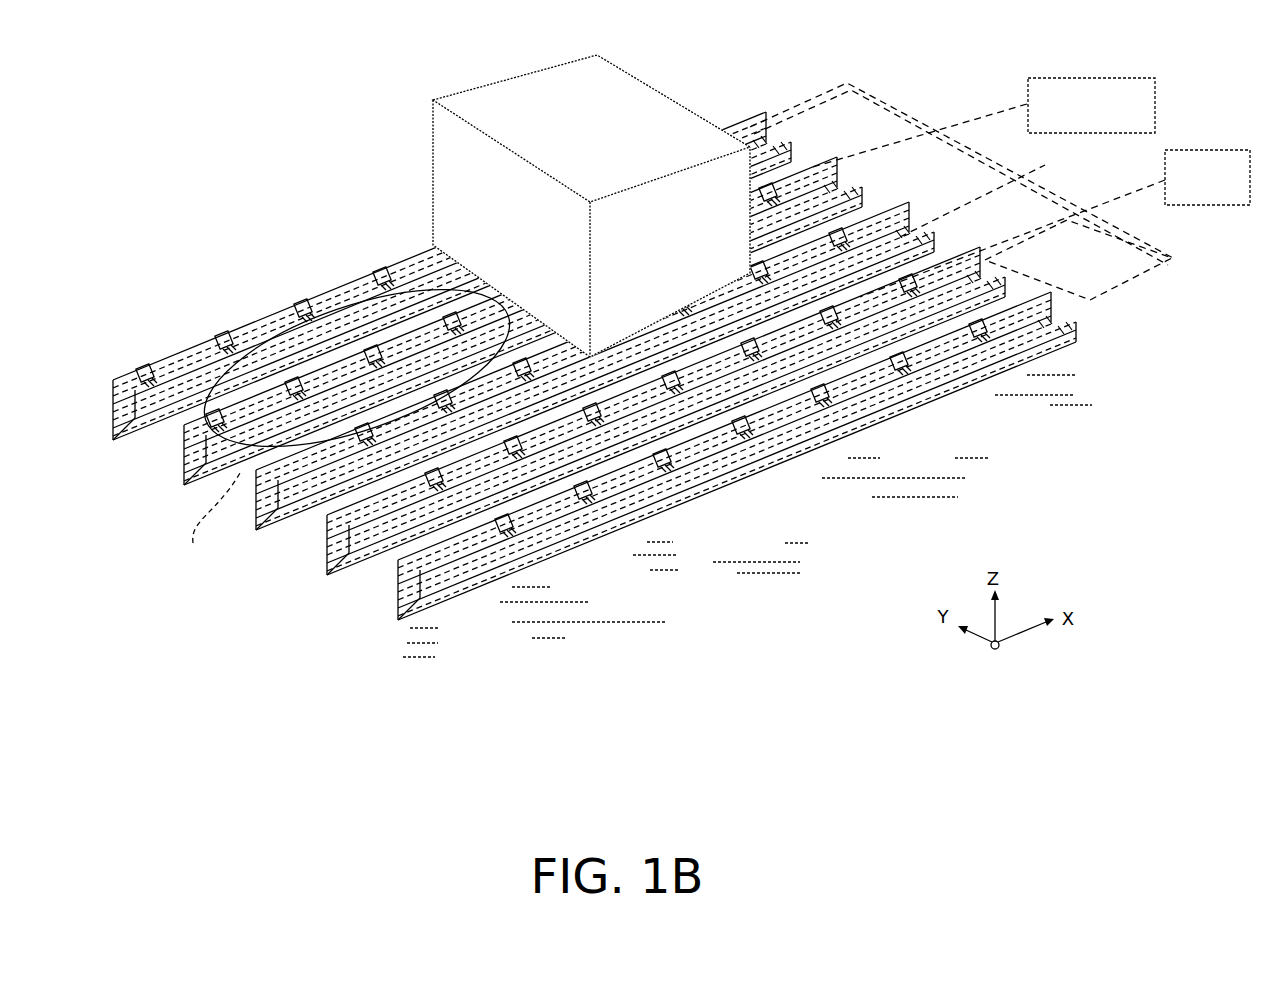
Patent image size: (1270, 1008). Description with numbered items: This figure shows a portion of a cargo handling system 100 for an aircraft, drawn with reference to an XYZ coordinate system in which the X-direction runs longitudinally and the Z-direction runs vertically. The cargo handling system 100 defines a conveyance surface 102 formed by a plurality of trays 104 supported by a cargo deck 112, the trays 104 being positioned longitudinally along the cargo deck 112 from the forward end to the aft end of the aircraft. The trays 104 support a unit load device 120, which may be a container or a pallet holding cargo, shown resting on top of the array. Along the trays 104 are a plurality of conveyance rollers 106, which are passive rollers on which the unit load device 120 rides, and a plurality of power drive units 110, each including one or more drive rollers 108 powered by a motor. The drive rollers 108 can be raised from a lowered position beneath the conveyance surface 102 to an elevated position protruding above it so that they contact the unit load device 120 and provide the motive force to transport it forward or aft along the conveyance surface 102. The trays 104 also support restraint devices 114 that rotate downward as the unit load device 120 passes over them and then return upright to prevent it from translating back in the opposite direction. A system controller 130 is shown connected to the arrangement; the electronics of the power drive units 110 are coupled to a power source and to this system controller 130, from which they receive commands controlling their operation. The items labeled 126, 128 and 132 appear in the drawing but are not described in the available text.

The cargo handling system 100 is at (229, 77).
The conveyance surface 102 is at (125, 319).
The trays 104 is at (264, 512).
The conveyance rollers 106 is at (308, 310).
The drive rollers 108 is at (630, 412).
The power drive units 110 is at (590, 420).
The cargo deck 112 is at (890, 461).
The restraint devices 114 is at (480, 548).
The unit load device 120 is at (615, 79).
The power supply 126 is at (1202, 142).
The power plate 128 is at (1059, 297).
The system controller 130 is at (1042, 69).
The cable 132 is at (805, 89).